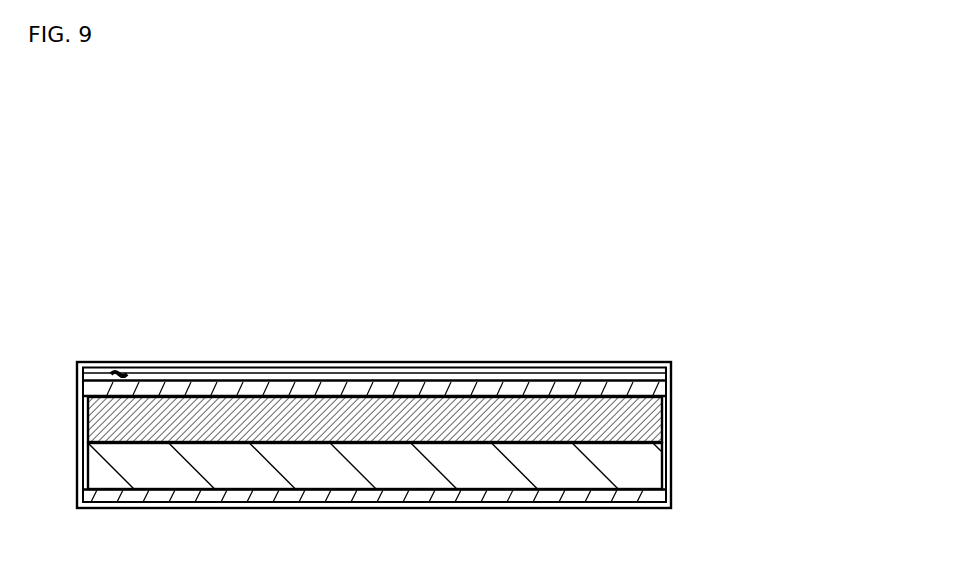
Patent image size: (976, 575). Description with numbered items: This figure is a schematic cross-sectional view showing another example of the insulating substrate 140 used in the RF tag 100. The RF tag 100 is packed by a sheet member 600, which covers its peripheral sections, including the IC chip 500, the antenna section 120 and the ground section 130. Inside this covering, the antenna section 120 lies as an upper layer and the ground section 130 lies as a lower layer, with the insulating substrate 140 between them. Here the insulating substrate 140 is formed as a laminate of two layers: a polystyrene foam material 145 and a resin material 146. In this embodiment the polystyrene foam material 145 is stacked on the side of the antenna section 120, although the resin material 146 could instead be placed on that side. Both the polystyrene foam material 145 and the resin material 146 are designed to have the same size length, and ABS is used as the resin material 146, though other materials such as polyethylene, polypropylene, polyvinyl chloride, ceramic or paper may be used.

The RF tag 100 is at (680, 266).
The IC chip 500 is at (133, 364).
The sheet member 600 is at (472, 369).
The antenna section 120 is at (580, 390).
The insulating substrate 140 is at (393, 369).
The polystyrene foam material 145 is at (246, 421).
The resin material 146 is at (270, 467).
The ground section 130 is at (580, 493).